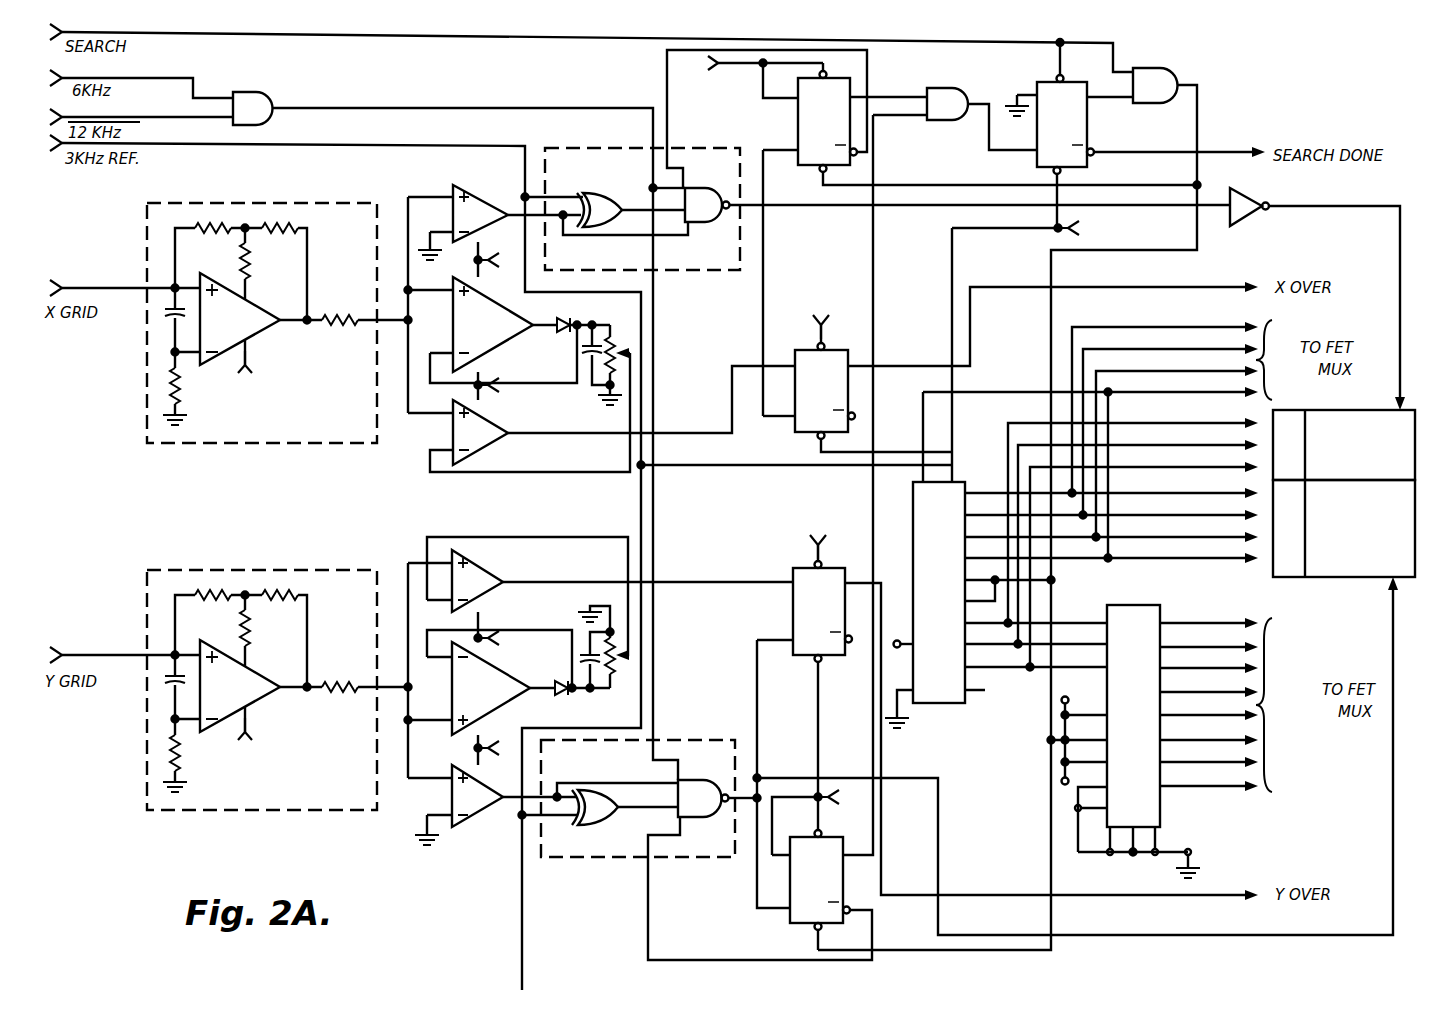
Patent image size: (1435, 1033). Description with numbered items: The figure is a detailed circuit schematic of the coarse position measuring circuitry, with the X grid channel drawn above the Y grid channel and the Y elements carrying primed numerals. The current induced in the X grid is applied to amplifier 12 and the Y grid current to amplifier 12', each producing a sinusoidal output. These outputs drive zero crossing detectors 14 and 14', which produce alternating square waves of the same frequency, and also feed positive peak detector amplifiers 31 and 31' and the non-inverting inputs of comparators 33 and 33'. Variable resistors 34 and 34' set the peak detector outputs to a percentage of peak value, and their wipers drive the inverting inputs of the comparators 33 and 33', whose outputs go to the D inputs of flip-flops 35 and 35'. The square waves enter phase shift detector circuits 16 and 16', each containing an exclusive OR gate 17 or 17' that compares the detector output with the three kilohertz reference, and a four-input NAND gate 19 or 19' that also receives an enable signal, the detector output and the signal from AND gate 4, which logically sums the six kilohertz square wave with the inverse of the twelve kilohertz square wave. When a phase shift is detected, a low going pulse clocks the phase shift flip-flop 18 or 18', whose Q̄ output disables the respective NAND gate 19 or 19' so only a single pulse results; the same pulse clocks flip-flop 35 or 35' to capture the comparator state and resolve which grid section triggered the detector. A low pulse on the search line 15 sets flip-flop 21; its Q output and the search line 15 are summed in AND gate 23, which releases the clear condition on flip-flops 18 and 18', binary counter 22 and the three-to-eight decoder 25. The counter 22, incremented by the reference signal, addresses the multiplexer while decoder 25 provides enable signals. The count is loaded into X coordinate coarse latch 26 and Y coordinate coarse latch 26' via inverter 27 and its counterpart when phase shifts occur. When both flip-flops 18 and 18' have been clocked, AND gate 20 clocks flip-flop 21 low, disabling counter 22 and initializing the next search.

The AND gate 4 is at (280, 92).
The search line 15 is at (415, 39).
The amplifier 12 is at (235, 304).
The amplifier 12' is at (235, 666).
The zero crossing detector 14 is at (548, 216).
The zero crossing detector 14' is at (543, 813).
The amplifier 31 is at (509, 338).
The amplifier 31' is at (509, 688).
The comparator 33 is at (601, 419).
The comparator 33' is at (600, 598).
The variable resistor 34 is at (531, 384).
The variable resistor 34' is at (604, 664).
The phase shift detector circuit 16 is at (642, 235).
The phase shift detector circuit 16' is at (638, 776).
The exclusive OR gate 17 is at (624, 194).
The exclusive OR gate 17' is at (617, 823).
The NAND gate 19 is at (957, 227).
The NAND gate 19' is at (719, 818).
The phase shift flip-flop 18 is at (932, 233).
The phase shift flip-flop 18' is at (760, 878).
The AND gate 20 is at (920, 88).
The flip-flop 21 is at (1040, 82).
The binary counter 22 is at (950, 703).
The AND gate 23 is at (1175, 78).
The 3-8 decoder 25 is at (1160, 795).
The X coordinate coarse latch 26 is at (1344, 433).
The Y coordinate coarse latch 26' is at (1086, 707).
The inverter 27 is at (1255, 188).
The flip-flop 35 is at (1001, 355).
The flip-flop 35' is at (1000, 718).